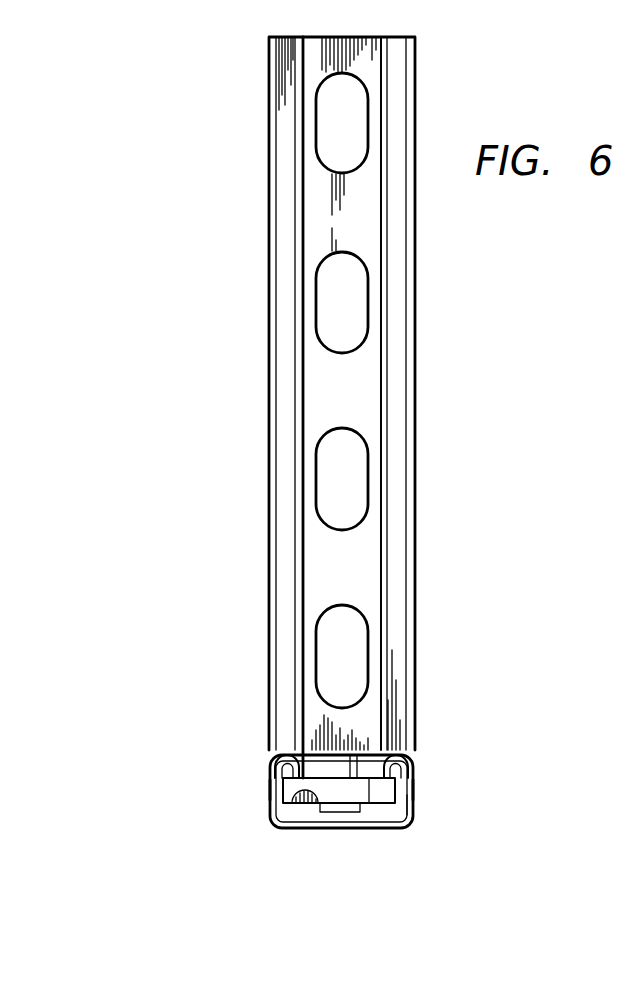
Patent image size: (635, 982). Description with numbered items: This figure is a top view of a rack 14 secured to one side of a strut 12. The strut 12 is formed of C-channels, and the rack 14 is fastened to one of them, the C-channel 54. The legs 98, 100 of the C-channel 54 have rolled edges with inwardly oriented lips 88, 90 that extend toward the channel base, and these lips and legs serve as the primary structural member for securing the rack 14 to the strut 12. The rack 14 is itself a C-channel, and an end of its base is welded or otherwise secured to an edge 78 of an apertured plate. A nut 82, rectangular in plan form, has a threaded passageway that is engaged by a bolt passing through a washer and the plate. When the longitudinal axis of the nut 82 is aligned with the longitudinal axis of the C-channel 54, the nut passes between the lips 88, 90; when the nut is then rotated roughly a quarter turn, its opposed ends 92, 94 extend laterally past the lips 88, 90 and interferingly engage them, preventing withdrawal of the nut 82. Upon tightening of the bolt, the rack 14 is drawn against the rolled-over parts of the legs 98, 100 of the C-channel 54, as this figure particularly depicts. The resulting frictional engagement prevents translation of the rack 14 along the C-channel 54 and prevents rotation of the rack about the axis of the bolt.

The rack 14 is at (418, 360).
The strut 12 is at (266, 818).
The leg 100 is at (268, 803).
The opposed end of nut 94 is at (270, 790).
The lip 90 is at (274, 767).
The lip 88 is at (410, 768).
The opposed end of nut 92 is at (413, 792).
The leg 98 is at (413, 807).
The edge of apertured plate 78 is at (290, 803).
The C-channel 54 is at (338, 812).
The nut 82 is at (369, 788).